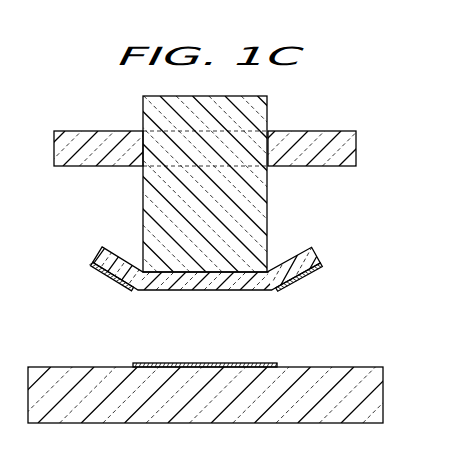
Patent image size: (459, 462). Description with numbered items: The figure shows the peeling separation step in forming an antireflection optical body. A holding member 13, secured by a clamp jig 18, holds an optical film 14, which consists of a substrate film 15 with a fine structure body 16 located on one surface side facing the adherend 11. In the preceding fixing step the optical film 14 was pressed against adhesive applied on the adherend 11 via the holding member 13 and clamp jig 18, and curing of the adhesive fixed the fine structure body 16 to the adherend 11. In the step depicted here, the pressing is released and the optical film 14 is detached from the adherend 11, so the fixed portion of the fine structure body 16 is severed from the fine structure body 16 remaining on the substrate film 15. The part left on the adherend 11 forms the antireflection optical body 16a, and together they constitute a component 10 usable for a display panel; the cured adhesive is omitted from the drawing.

The component 10 is at (209, 356).
The adherend 11 is at (295, 372).
The holding member 13 is at (268, 184).
The optical film 14 is at (243, 249).
The substrate film 15 is at (311, 249).
The fine structure body 16 is at (321, 262).
The antireflection optical body 16a is at (133, 365).
The clamp jig 18 is at (90, 163).